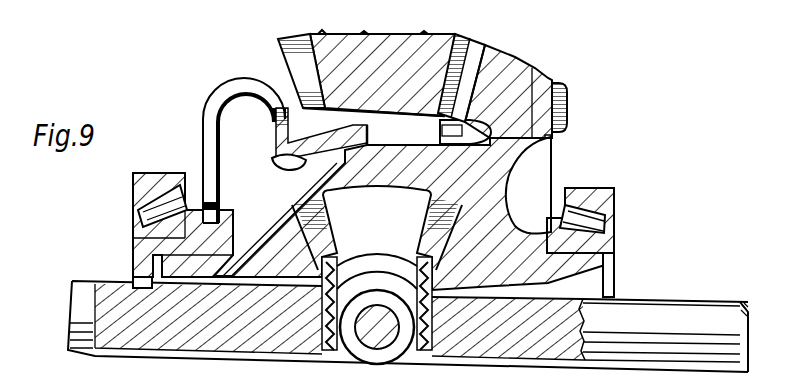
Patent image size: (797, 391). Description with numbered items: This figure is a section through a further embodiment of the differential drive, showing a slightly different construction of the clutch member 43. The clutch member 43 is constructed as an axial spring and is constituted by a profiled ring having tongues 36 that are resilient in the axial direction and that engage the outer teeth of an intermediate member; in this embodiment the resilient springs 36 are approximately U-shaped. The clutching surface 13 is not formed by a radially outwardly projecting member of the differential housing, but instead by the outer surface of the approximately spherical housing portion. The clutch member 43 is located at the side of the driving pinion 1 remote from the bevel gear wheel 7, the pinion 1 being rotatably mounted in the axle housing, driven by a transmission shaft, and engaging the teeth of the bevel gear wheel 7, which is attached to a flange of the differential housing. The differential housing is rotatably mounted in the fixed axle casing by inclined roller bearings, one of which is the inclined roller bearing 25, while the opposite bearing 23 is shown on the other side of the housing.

The driving pinion 1 is at (312, 60).
The bevel gear wheel 7 is at (502, 72).
The clutching surface 13 is at (280, 166).
The right tapered roller bearing 23 is at (614, 215).
The inclined roller bearing 25 is at (142, 218).
The tongues 36 is at (212, 128).
The clutch member 43 is at (275, 138).